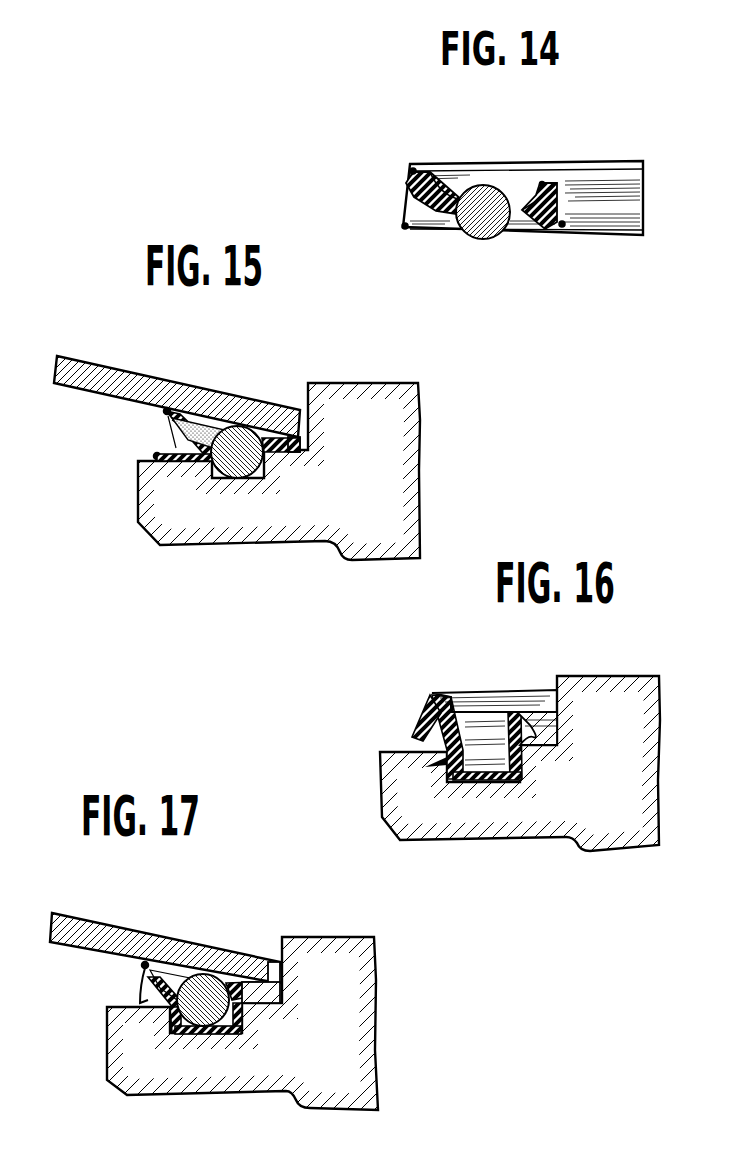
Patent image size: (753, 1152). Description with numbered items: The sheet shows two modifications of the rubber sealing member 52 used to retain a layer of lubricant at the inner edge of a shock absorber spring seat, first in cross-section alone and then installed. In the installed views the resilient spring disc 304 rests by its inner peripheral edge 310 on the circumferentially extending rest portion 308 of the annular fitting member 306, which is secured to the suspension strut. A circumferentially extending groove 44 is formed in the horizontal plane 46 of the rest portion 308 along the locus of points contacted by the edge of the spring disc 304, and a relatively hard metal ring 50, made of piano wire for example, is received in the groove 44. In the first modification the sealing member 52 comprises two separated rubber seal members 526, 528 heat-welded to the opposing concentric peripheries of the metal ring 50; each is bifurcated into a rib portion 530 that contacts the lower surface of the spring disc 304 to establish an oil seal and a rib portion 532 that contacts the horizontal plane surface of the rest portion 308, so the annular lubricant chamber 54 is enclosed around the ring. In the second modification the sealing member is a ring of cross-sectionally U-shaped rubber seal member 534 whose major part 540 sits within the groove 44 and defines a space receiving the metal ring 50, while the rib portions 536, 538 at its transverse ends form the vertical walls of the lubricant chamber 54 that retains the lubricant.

In FIG. 15, the groove 44 is at (216, 482).
In FIG. 16, the groove 44 is at (525, 790).
In FIG. 17, the groove 44 is at (206, 1018).
In FIG. 15, the horizontal plane 46 is at (145, 460).
In FIG. 16, the horizontal plane 46 is at (572, 785).
In FIG. 17, the horizontal plane 46 is at (112, 1007).
In FIG. 14, the metal ring 50 is at (483, 234).
In FIG. 15, the metal ring 50 is at (245, 470).
In FIG. 17, the metal ring 50 is at (207, 1024).
In FIG. 14, the sealing member 52 is at (476, 156).
In FIG. 15, the sealing member 52 is at (186, 402).
In FIG. 16, the sealing member 52 is at (466, 690).
In FIG. 15, the lubricant chamber 54 is at (206, 430).
In FIG. 17, the lubricant chamber 54 is at (170, 980).
In FIG. 15, the spring disc 304 is at (88, 370).
In FIG. 17, the spring disc 304 is at (76, 926).
In FIG. 15, the fitting member 306 is at (414, 463).
In FIG. 16, the fitting member 306 is at (652, 782).
In FIG. 17, the fitting member 306 is at (369, 1016).
In FIG. 15, the rest portion 308 is at (140, 433).
In FIG. 16, the rest portion 308 is at (392, 742).
In FIG. 17, the rest portion 308 is at (118, 977).
In FIG. 17, the inner peripheral edge 310 is at (275, 963).
In FIG. 14, the rubber seal member 526 is at (418, 195).
In FIG. 15, the rubber seal member 526 is at (150, 452).
In FIG. 14, the rubber seal member 528 is at (567, 192).
In FIG. 15, the rubber seal member 528 is at (292, 437).
In FIG. 14, the rib portion 530 is at (413, 168).
In FIG. 15, the rib portion 530 is at (163, 411).
In FIG. 14, the rib portion 532 is at (405, 230).
In FIG. 15, the rib portion 532 is at (138, 524).
In FIG. 16, the rubber seal member 534 is at (392, 790).
In FIG. 17, the rubber seal member 534 is at (182, 1038).
In FIG. 16, the rib portion 536 is at (430, 708).
In FIG. 17, the rib portion 536 is at (138, 998).
In FIG. 16, the rib portion 538 is at (518, 735).
In FIG. 17, the rib portion 538 is at (262, 1006).
In FIG. 16, the major part 540 is at (486, 786).